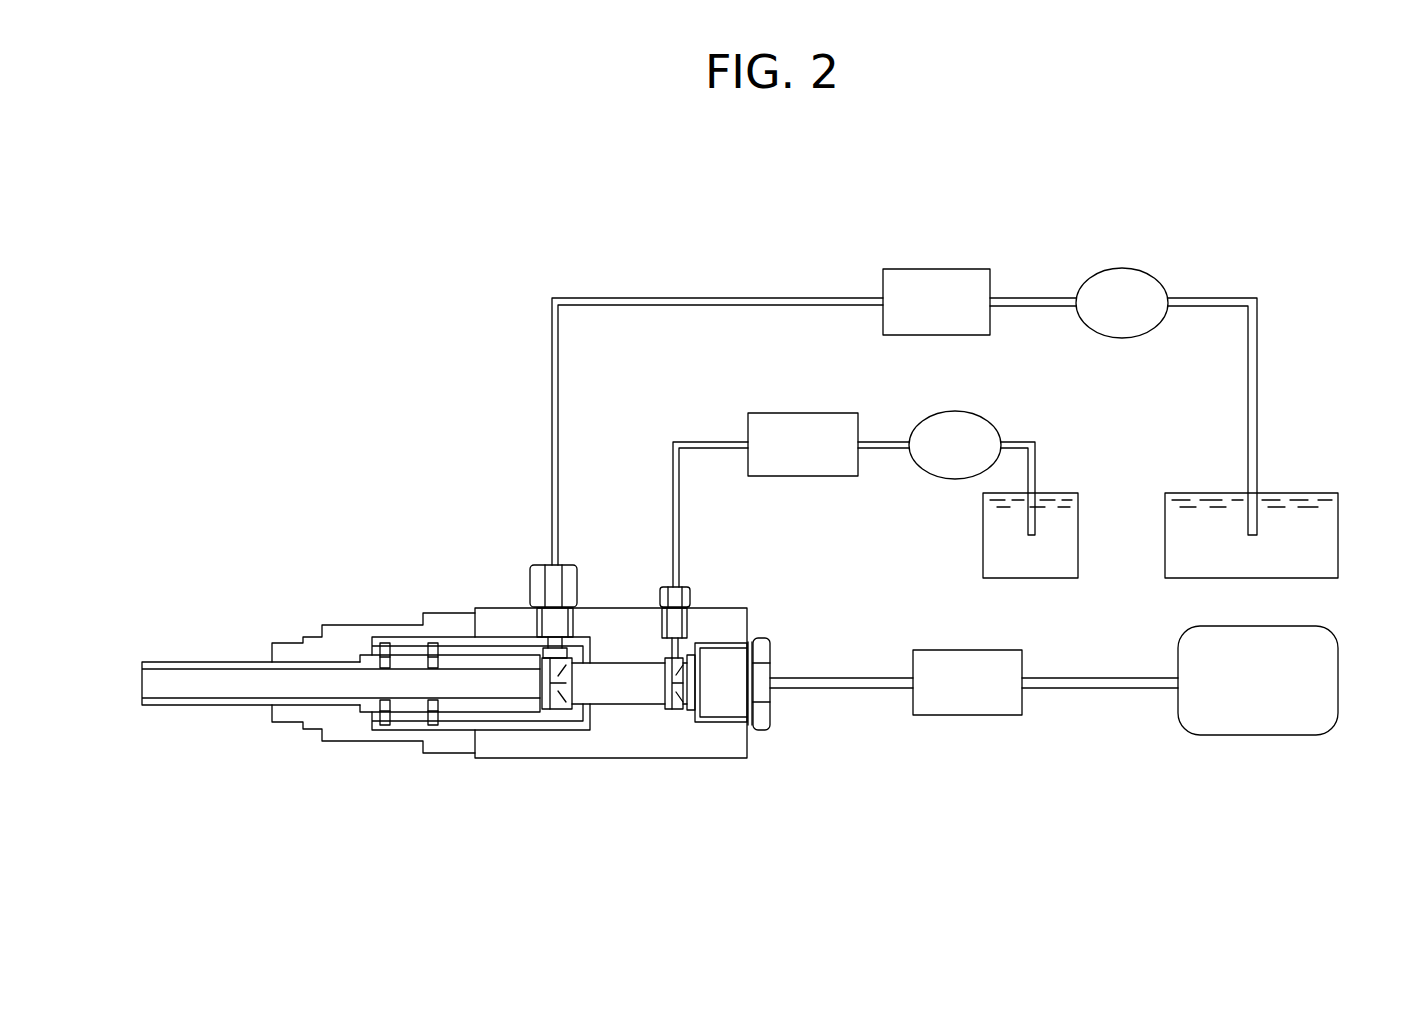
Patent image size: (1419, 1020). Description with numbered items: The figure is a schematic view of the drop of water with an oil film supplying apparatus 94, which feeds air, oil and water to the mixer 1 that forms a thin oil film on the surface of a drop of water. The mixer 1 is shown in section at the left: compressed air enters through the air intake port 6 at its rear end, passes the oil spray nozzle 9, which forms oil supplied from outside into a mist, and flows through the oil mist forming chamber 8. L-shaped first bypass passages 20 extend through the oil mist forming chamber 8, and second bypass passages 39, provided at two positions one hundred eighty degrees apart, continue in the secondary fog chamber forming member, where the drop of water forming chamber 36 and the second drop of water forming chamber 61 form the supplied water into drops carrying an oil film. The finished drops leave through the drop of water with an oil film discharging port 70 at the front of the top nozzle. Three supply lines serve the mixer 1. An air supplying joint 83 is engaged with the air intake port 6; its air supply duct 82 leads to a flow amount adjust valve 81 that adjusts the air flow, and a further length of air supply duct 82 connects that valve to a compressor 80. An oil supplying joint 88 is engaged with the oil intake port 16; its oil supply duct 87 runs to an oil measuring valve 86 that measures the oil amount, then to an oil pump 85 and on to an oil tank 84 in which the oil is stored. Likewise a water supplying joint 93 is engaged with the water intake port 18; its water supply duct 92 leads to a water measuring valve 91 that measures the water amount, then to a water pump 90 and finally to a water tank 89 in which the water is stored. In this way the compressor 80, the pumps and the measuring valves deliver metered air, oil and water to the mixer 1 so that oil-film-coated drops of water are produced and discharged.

The mixer 1 is at (360, 601).
The air intake port 6 is at (723, 722).
The oil mist forming chamber 8 is at (632, 696).
The oil spray nozzle 9 is at (676, 708).
The oil intake port 16 is at (687, 622).
The water intake port 18 is at (573, 625).
The first bypass passage 20 is at (497, 637).
The drop of water forming chamber 36 is at (496, 690).
The second bypass passage 39 is at (412, 640).
The second drop of water forming chamber 61 is at (338, 688).
The drop of water with an oil film discharging port 70 is at (150, 686).
The compressor 80 is at (1312, 660).
The flow amount adjust valve 81 is at (970, 660).
The air supply duct 82 is at (853, 677).
The air supplying joint 83 is at (760, 640).
The oil tank 84 is at (1073, 493).
The oil pump 85 is at (960, 412).
The oil measuring valve 86 is at (792, 413).
The oil supply duct 87 is at (705, 442).
The oil supplying joint 88 is at (695, 593).
The water tank 89 is at (1310, 493).
The water pump 90 is at (1130, 272).
The water measuring valve 91 is at (935, 268).
The water supply duct 92 is at (706, 297).
The water supplying joint 93 is at (578, 577).
The drop of water with an oil film supplying apparatus 94 is at (914, 373).